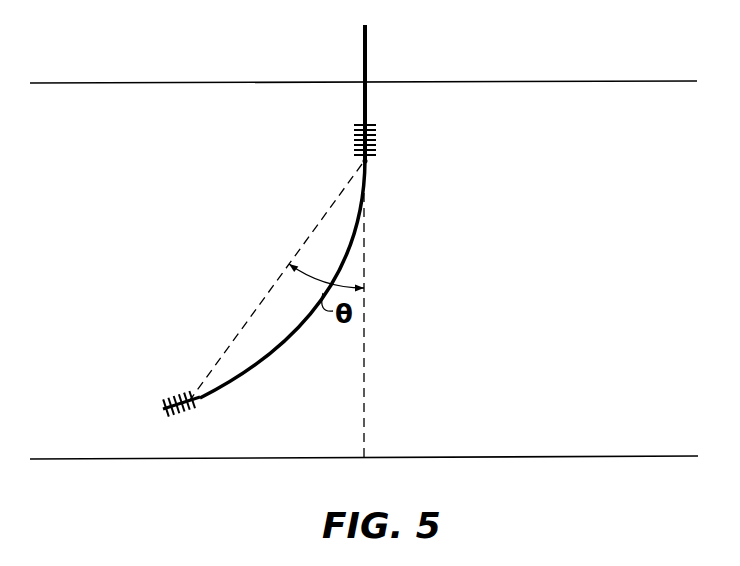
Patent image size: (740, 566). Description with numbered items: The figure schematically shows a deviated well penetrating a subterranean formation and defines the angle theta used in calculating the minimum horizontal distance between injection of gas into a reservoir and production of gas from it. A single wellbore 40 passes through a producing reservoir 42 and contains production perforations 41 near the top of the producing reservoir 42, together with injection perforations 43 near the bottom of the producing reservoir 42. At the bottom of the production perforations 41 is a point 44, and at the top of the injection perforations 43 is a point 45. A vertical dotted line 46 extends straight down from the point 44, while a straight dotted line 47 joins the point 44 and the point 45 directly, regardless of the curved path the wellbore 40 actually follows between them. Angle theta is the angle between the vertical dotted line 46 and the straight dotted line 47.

The wellbore 40 is at (367, 48).
The production perforations 41 is at (382, 135).
The producing reservoir 42 is at (562, 287).
The injection perforations 43 is at (163, 392).
The point 44 is at (369, 163).
The point 45 is at (197, 401).
The vertical dotted line 46 is at (365, 355).
The straight dotted line 47 is at (266, 297).